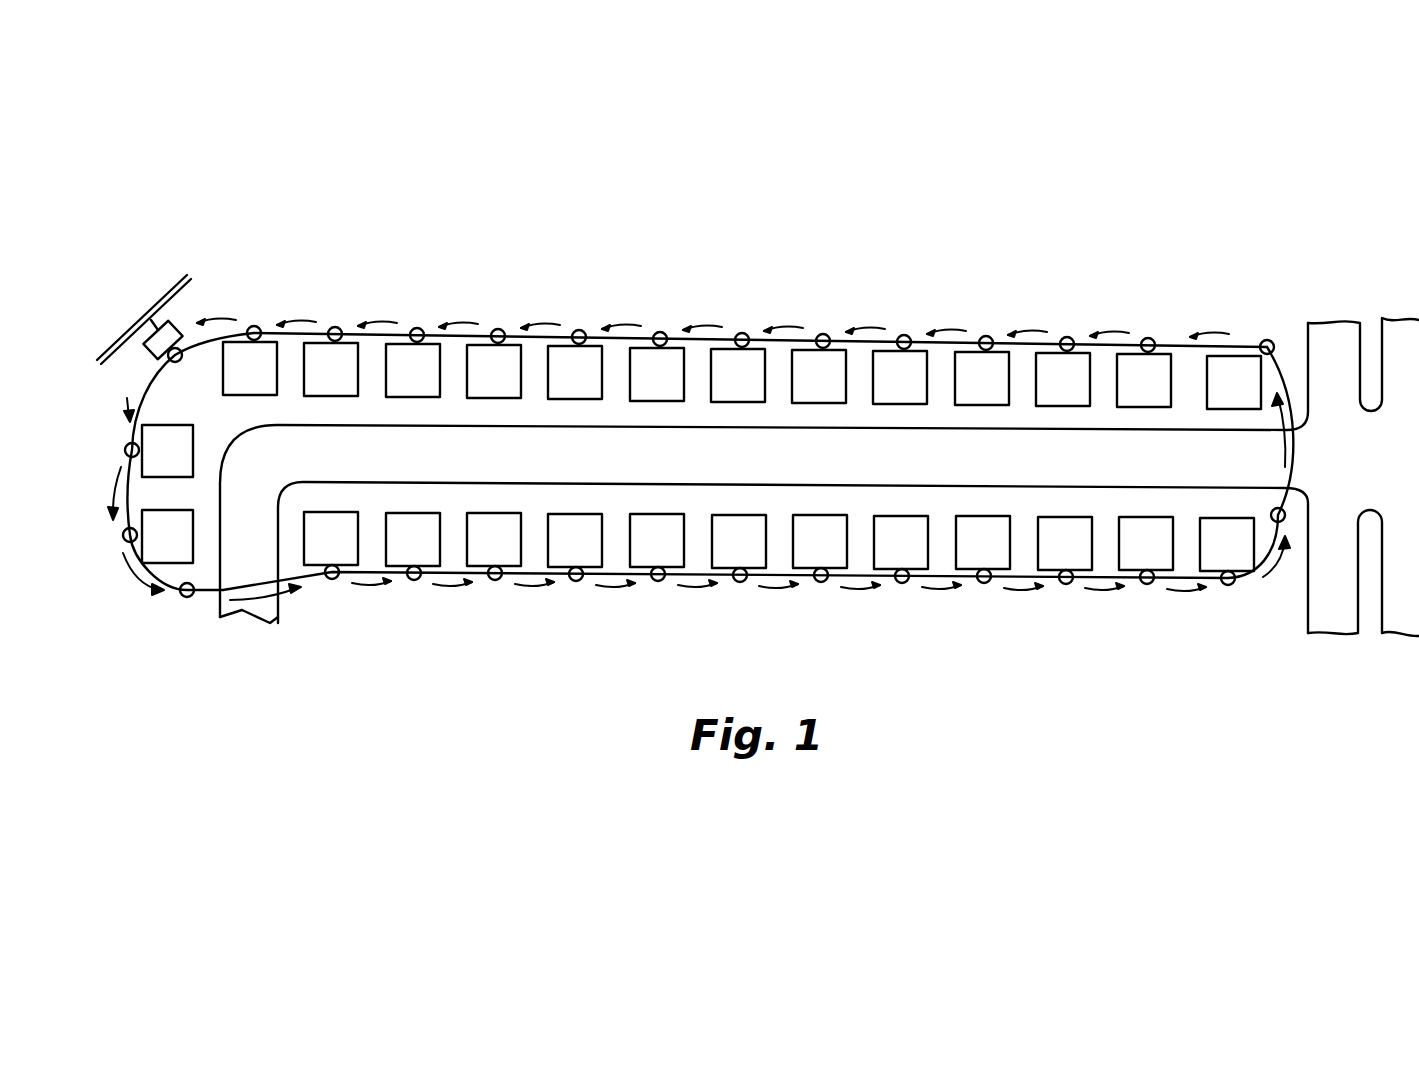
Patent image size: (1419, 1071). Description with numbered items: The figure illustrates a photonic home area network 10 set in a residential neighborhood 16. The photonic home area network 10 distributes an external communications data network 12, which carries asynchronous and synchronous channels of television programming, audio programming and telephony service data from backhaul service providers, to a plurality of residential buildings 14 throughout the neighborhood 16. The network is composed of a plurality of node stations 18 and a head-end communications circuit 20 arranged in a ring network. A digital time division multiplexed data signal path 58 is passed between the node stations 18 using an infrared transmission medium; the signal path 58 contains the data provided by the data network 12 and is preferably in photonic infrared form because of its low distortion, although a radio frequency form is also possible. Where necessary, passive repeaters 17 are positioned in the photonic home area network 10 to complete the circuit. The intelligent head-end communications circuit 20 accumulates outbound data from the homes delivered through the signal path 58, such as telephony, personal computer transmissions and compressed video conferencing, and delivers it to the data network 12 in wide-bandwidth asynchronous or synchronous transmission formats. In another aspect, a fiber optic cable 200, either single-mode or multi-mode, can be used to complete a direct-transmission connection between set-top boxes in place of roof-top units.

The photonic home area network 10 is at (981, 314).
The external communications data network 12 is at (156, 297).
The residential building 14 is at (348, 355).
The residential neighborhood 16 is at (682, 461).
The passive repeater 17 is at (1286, 511).
The node station 18 is at (336, 328).
The head-end communications circuit 20 is at (187, 325).
The multiplexed data signal path 58 is at (787, 323).
The fiber optic cable 200 is at (560, 337).